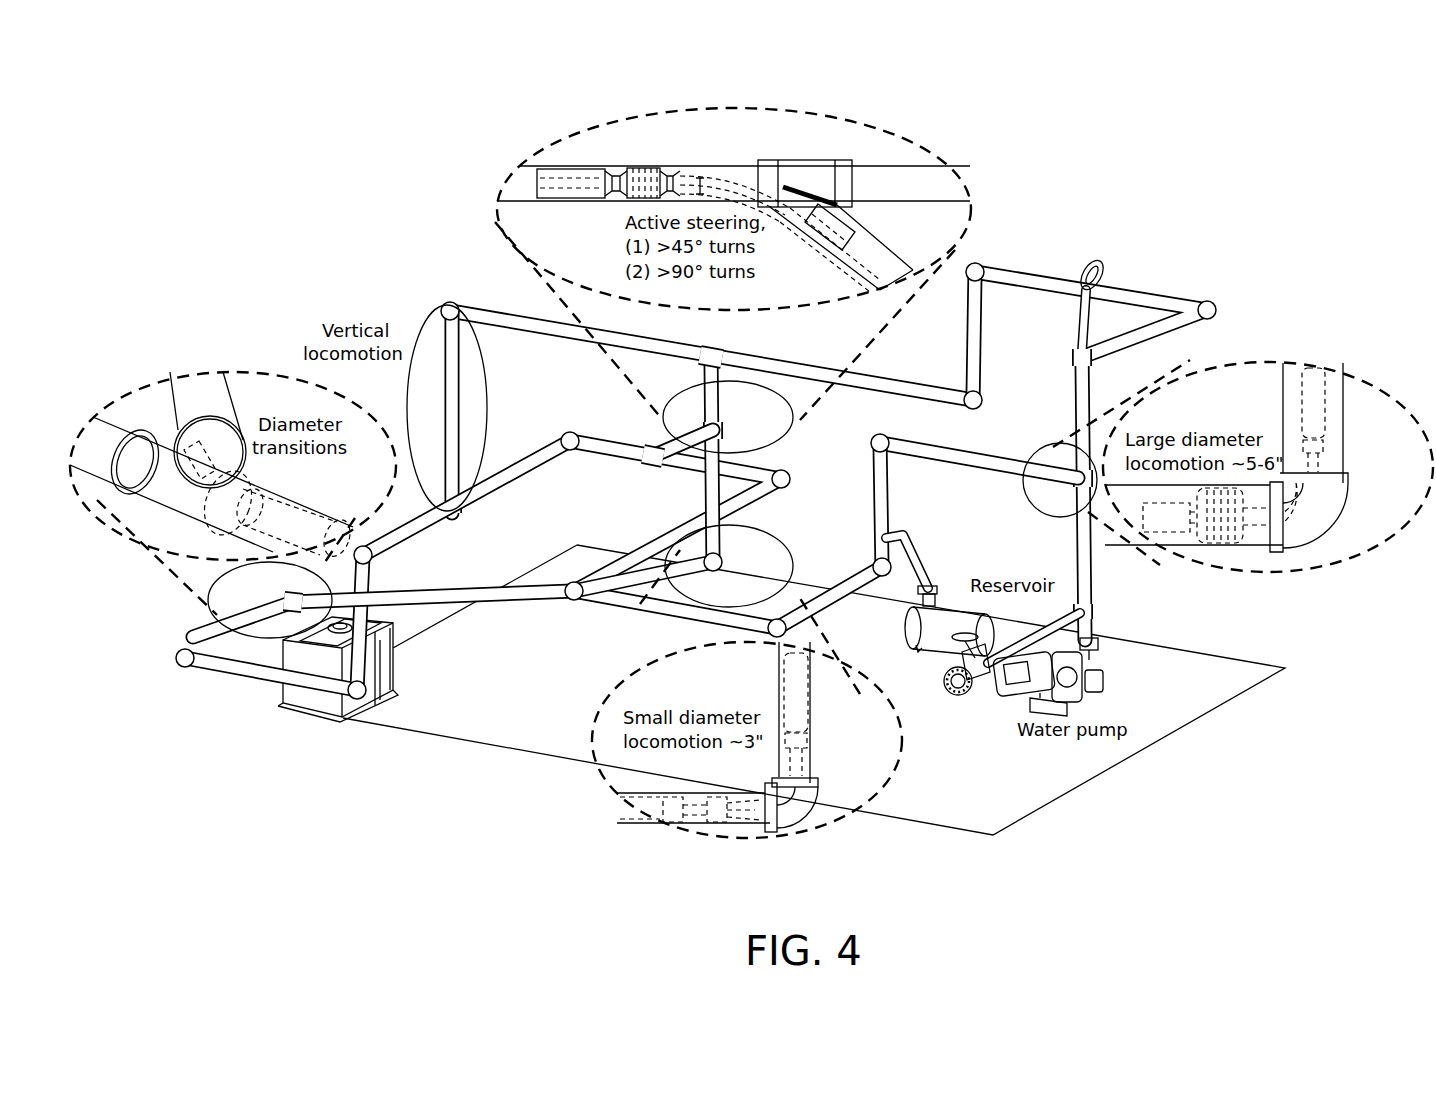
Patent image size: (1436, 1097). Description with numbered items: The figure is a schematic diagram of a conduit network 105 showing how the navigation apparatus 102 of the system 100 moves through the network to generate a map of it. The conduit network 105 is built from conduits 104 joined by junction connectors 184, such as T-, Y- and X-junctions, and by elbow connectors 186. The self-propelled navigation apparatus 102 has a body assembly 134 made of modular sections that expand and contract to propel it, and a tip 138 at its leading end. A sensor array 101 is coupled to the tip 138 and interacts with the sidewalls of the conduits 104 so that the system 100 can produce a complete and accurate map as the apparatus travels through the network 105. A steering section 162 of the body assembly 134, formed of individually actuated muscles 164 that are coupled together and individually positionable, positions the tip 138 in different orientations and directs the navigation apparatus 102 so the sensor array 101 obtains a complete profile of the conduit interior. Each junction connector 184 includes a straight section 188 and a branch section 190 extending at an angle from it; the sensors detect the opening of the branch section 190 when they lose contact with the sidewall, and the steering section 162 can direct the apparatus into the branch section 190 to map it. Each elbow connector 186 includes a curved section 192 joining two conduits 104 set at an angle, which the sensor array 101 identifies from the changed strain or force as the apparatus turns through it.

The system 100 is at (596, 146).
The sensor array 101 is at (198, 432).
The navigation apparatus 102 is at (693, 158).
The conduit 104 is at (947, 187).
The conduit network 105 is at (1062, 262).
The body assembly 134 is at (653, 165).
The tip 138 is at (880, 225).
The steering section 162 is at (725, 177).
The individually actuated muscles 164 is at (772, 832).
The junction connector 184 is at (803, 160).
The elbow connector 186 is at (748, 822).
The straight section 188 is at (520, 183).
The branch section 190 is at (885, 245).
The curved section 192 is at (1347, 500).